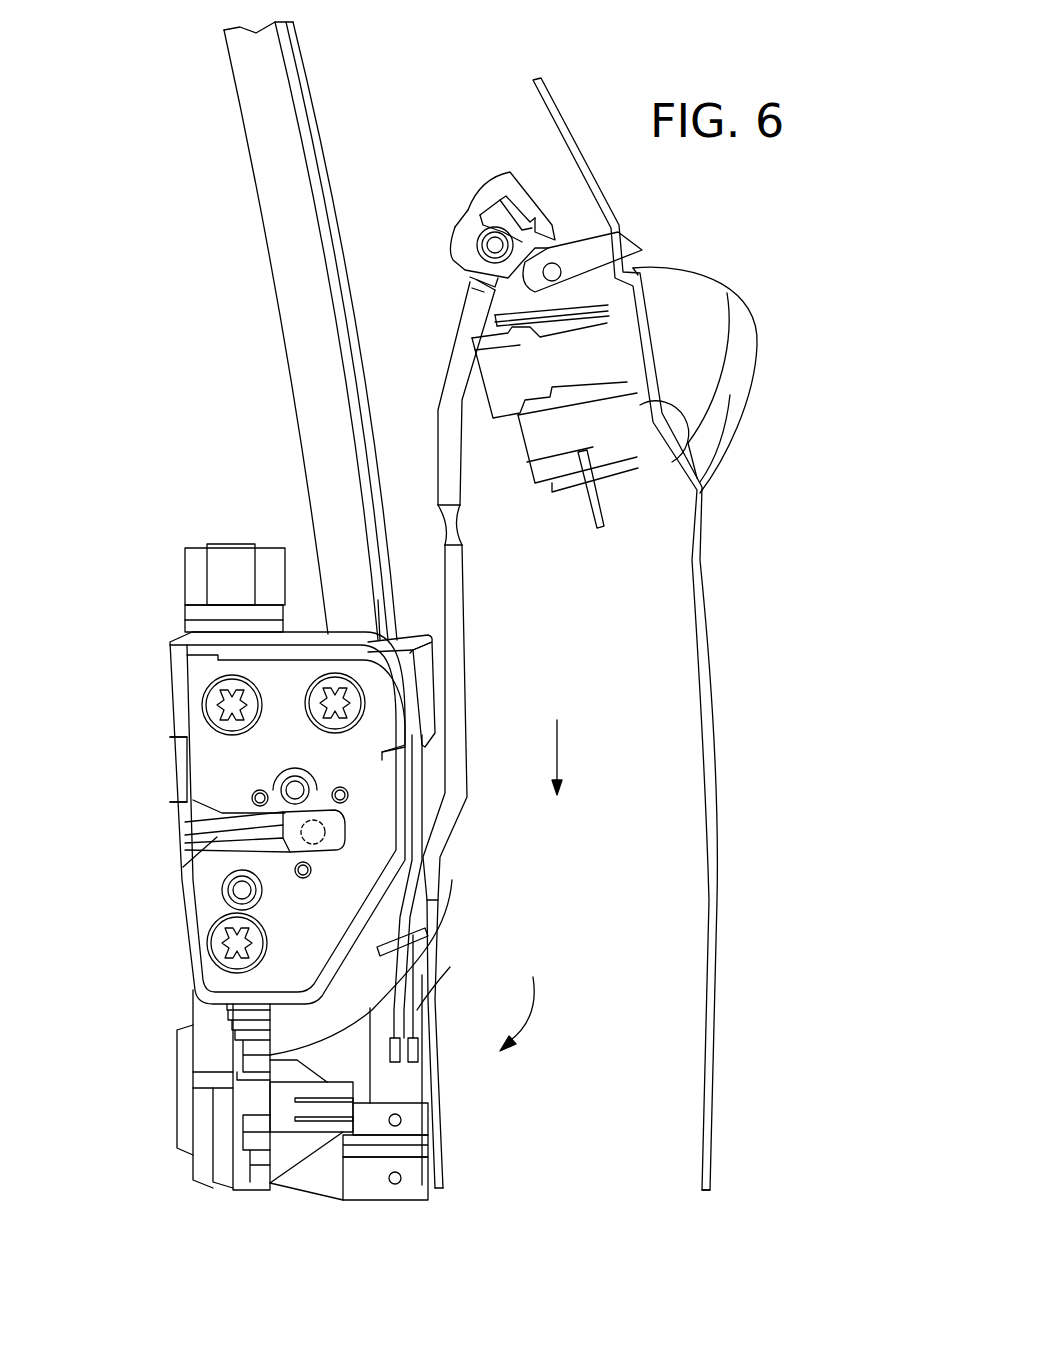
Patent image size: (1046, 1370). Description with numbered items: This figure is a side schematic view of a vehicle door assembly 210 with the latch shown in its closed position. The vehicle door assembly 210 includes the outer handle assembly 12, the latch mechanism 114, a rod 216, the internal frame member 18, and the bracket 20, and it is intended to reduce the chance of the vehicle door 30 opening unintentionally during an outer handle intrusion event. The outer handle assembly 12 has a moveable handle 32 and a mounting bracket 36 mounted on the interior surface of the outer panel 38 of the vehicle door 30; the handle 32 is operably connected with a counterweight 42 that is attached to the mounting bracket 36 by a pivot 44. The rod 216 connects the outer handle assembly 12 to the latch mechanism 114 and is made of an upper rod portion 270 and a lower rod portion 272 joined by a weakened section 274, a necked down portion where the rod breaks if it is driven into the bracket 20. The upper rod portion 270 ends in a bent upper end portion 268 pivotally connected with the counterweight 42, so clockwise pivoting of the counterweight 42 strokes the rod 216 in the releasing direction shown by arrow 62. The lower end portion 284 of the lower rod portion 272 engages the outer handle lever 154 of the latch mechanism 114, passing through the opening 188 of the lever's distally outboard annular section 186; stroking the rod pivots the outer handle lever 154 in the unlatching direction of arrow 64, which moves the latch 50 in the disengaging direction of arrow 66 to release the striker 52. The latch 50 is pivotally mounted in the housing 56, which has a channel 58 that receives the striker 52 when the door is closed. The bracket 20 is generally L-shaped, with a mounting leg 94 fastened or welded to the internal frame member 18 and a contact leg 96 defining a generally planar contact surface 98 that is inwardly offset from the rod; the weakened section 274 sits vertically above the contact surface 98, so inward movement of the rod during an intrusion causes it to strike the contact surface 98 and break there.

The outer handle assembly 12 is at (775, 357).
The internal frame member 18 is at (290, 300).
The bracket 20 is at (415, 633).
The vehicle door 30 is at (742, 883).
The handle 32 is at (740, 420).
The mounting bracket 36 is at (665, 462).
The outer panel 38 is at (712, 813).
The counterweight 42 is at (492, 183).
The pivot 44 is at (552, 268).
The latch 50 is at (293, 835).
The striker 52 is at (330, 840).
The housing 56 is at (183, 683).
The channel 58 is at (200, 848).
The releasing direction arrow 62 is at (560, 745).
The unlatching direction arrow 64 is at (528, 1013).
The disengaging direction arrow 66 is at (330, 760).
The mounting leg 94 is at (378, 625).
The contact leg 96 is at (427, 672).
The contact surface 98 is at (430, 713).
The latch mechanism 114 is at (165, 737).
The outer handle lever 154 is at (414, 957).
The annular section 186 is at (426, 930).
The opening 188 is at (424, 904).
The vehicle door assembly 210 is at (165, 562).
The rod 216 is at (490, 632).
The bent upper end portion 268 is at (490, 243).
The upper rod portion 270 is at (447, 428).
The lower rod portion 272 is at (465, 775).
The weakened section 274 is at (460, 528).
The lower end portion 284 is at (440, 866).